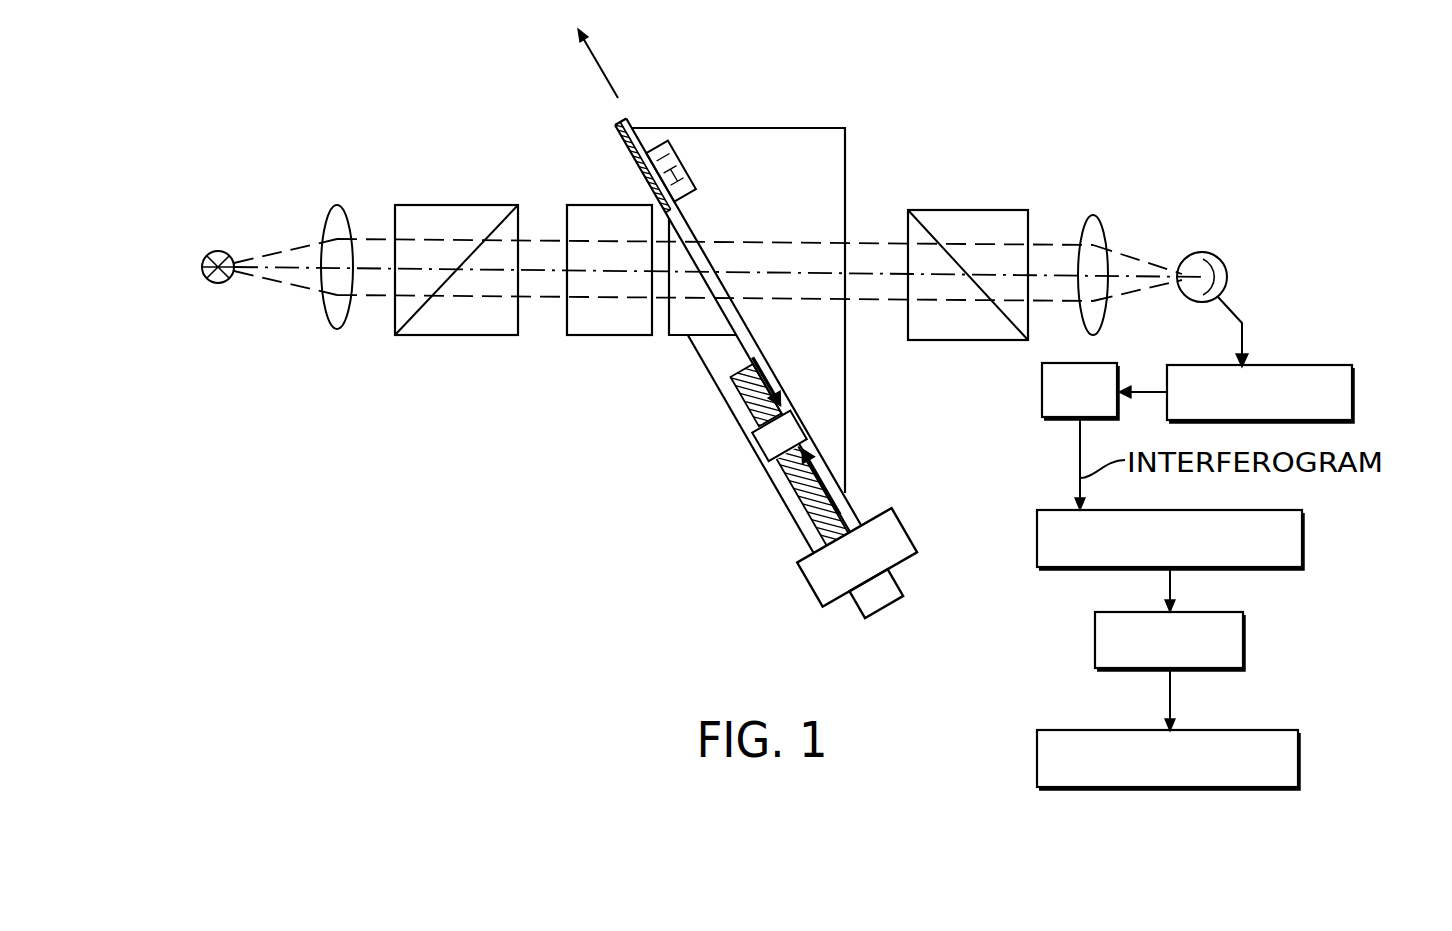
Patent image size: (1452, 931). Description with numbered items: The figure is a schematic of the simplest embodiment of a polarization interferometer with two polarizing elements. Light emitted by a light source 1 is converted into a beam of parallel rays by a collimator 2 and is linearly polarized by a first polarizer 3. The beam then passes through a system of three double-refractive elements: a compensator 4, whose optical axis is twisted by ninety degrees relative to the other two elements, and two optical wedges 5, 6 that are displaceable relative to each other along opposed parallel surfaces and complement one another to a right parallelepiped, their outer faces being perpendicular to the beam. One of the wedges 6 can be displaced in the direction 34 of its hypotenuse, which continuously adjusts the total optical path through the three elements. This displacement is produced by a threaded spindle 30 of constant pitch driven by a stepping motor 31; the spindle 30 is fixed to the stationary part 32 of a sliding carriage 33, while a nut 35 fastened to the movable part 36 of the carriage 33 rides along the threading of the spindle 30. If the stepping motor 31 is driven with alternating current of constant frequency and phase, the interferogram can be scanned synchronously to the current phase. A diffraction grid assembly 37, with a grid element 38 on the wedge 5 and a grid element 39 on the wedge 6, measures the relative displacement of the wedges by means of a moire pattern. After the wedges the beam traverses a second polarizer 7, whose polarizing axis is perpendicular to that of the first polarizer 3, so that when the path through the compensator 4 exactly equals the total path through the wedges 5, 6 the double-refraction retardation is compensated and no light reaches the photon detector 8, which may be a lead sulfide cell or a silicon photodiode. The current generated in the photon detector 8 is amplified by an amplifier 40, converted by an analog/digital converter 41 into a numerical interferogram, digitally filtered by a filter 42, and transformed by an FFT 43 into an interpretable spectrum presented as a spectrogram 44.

The light source 1 is at (221, 283).
The collimator 2 is at (337, 330).
The first polarizer 3 is at (458, 336).
The compensator 4 is at (601, 337).
The optical wedge 5 is at (677, 338).
The optical wedge 6 is at (820, 398).
The second polarizer 7 is at (942, 340).
The photon detector 8 is at (1205, 302).
The threaded spindle 30 is at (841, 500).
The stepping motor 31 is at (906, 527).
The stationary part 32 is at (797, 517).
The sliding carriage 33 is at (870, 619).
The direction of the hypotenuse 34 is at (602, 64).
The nut 35 is at (765, 449).
The movable part 36 is at (752, 412).
The diffraction grid assembly 37 is at (600, 140).
The grid element 38 is at (643, 177).
The grid element 39 is at (679, 157).
The amplifier 40 is at (1268, 366).
The analog/digital converter 41 is at (1040, 405).
The filter 42 is at (1037, 530).
The FFT 43 is at (1243, 631).
The spectrogram 44 is at (1243, 730).